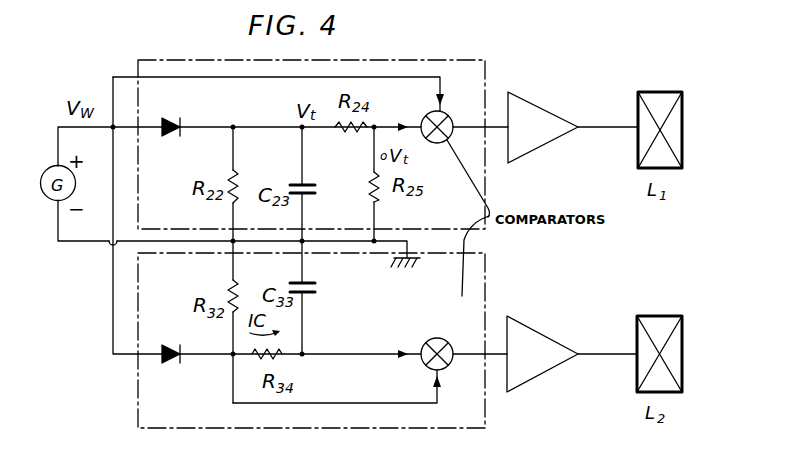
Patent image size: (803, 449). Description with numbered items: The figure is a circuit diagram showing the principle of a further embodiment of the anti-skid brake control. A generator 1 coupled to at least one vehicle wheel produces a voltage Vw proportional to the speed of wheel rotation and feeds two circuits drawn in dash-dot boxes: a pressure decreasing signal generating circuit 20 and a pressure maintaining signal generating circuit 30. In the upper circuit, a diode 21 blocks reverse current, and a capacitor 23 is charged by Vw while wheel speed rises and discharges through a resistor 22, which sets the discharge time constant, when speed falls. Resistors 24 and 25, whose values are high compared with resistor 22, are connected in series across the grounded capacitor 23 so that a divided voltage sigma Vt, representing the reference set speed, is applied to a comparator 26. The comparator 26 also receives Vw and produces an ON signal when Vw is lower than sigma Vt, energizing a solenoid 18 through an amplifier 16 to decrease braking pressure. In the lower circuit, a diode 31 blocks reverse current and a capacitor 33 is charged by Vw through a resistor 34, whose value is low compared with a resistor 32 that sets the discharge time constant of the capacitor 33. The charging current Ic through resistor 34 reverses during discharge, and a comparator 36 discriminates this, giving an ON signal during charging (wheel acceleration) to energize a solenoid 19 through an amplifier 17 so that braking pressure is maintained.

The generator 1 is at (76, 183).
The amplifier 16 is at (553, 106).
The amplifier 17 is at (537, 330).
The solenoid 18 is at (683, 111).
The solenoid 19 is at (682, 339).
The pressure decreasing signal generating circuit 20 is at (433, 60).
The diode 21 is at (171, 118).
The resistor 22 is at (237, 170).
The capacitor 23 is at (307, 184).
The resistor 24 is at (365, 123).
The resistor 25 is at (378, 197).
The comparator 26 is at (448, 116).
The pressure maintaining signal generating circuit 30 is at (489, 296).
The diode 31 is at (170, 364).
The resistor 32 is at (237, 290).
The capacitor 33 is at (316, 292).
The resistor 34 is at (282, 358).
The comparator 36 is at (447, 340).